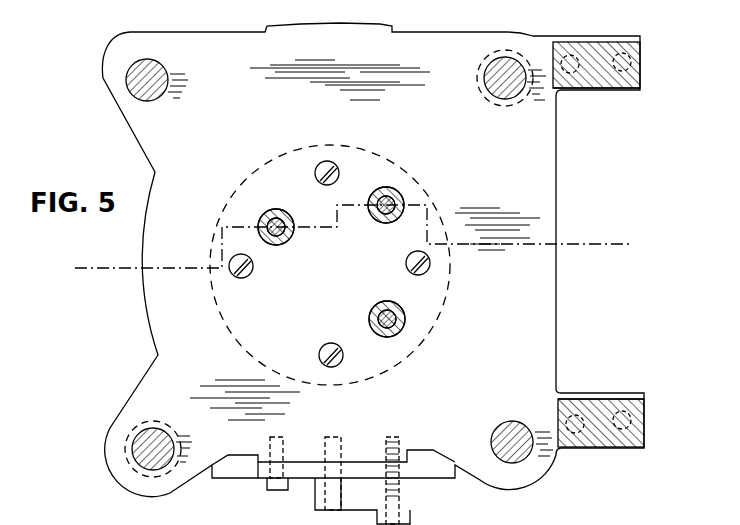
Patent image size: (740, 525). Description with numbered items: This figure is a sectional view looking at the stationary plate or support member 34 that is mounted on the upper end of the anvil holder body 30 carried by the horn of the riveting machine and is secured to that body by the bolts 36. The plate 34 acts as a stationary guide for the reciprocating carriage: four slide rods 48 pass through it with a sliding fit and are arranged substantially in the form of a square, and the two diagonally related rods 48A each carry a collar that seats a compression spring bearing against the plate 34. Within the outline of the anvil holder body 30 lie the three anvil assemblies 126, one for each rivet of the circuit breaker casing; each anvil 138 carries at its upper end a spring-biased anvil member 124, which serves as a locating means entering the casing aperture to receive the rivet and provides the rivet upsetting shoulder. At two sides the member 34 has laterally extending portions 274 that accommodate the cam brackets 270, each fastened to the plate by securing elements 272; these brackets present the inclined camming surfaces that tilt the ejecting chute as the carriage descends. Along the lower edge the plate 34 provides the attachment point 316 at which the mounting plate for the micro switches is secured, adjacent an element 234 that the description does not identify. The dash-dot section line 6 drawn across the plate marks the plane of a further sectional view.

The plate or support member 34 is at (130, 146).
The slide rods 48 is at (168, 82).
The diagonally related slide rods 48A is at (490, 78).
The anvil holder body 30 is at (359, 146).
The bolts 36 is at (323, 184).
The anvil member 124 is at (262, 227).
The anvil assembly 126 is at (262, 216).
The anvil 138 is at (281, 210).
The section line 6- 6 is at (100, 272).
The cam brackets 270 is at (643, 47).
The securing elements 272 is at (612, 76).
The laterally extending portions 274 is at (628, 92).
The securing point of mounting plate 316 is at (272, 488).
The threaded bolt 234 is at (400, 480).